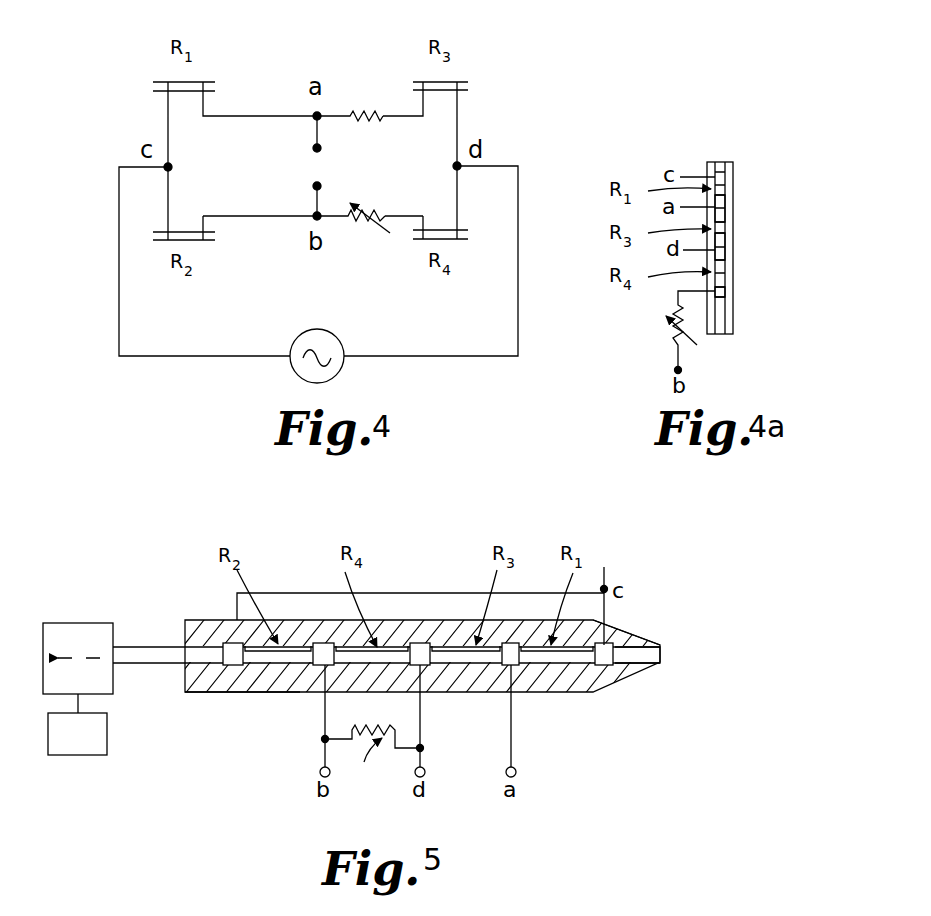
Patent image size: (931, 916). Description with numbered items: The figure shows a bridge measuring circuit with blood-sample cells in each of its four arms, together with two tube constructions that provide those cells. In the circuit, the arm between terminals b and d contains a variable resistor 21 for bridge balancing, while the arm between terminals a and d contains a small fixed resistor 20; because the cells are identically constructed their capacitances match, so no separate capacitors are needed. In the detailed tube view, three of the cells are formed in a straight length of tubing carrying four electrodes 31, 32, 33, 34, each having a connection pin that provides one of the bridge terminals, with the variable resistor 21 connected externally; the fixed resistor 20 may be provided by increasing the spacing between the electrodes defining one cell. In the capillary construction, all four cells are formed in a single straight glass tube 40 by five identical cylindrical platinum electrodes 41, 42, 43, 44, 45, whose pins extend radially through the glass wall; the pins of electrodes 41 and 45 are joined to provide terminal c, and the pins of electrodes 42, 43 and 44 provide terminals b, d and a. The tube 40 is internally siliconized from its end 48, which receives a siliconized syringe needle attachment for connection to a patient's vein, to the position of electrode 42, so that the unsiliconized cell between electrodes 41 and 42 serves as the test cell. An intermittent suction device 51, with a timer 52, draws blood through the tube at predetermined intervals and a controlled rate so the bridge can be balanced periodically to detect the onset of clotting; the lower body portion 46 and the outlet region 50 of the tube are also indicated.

In FIG. 4, the fixed resistor 20 is at (350, 97).
In FIG. 4, the variable resistor 21 is at (353, 229).
In FIG. 4A, the variable resistor 21 is at (672, 337).
In FIG. 5, the variable resistor 21 is at (372, 755).
In FIG. 4A, the electrode 31 is at (727, 171).
In FIG. 4A, the electrode 32 is at (726, 208).
In FIG. 4A, the electrode 33 is at (726, 248).
In FIG. 4A, the electrode 34 is at (733, 291).
In FIG. 5, the glass tube 40 is at (200, 622).
In FIG. 5, the cylindrical platinum electrode 41 is at (233, 655).
In FIG. 5, the cylindrical platinum electrode 42 is at (330, 655).
In FIG. 5, the cylindrical platinum electrode 43 is at (422, 655).
In FIG. 5, the cylindrical platinum electrode 44 is at (515, 652).
In FIG. 5, the cylindrical platinum electrode 45 is at (605, 652).
In FIG. 5, the lower body portion 46 is at (200, 686).
In FIG. 5, the end of tube 48 is at (633, 640).
In FIG. 5, the orifice 50 is at (637, 661).
In FIG. 5, the intermittent suction device 51 is at (79, 622).
In FIG. 5, the timer 52 is at (80, 756).